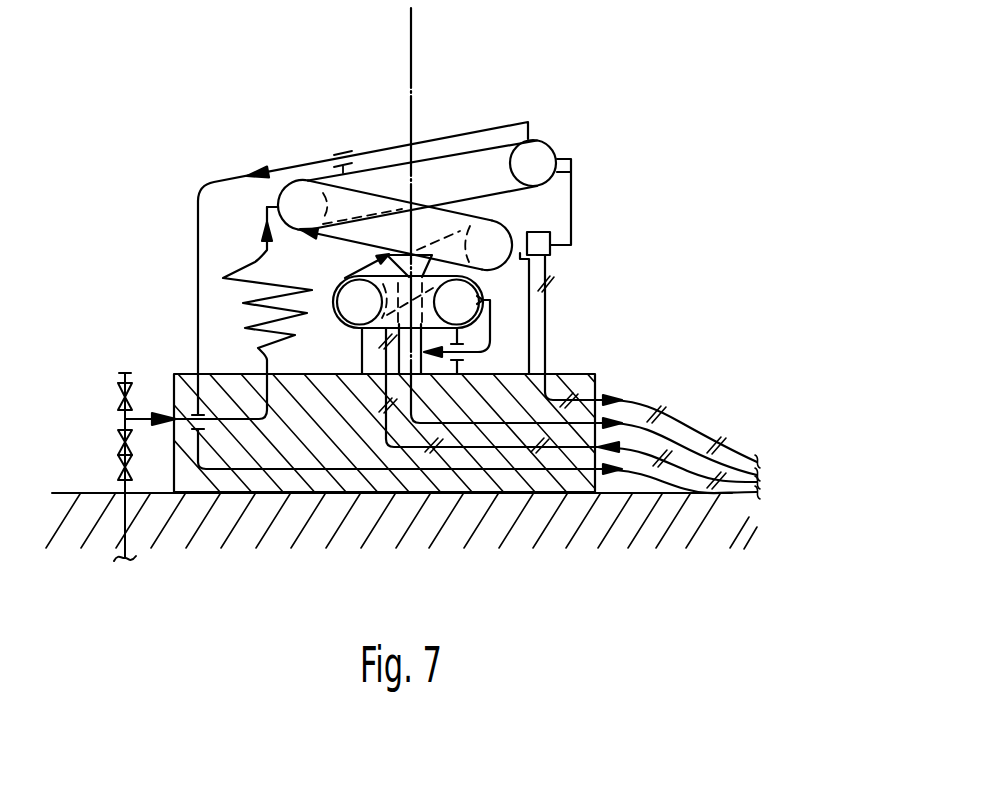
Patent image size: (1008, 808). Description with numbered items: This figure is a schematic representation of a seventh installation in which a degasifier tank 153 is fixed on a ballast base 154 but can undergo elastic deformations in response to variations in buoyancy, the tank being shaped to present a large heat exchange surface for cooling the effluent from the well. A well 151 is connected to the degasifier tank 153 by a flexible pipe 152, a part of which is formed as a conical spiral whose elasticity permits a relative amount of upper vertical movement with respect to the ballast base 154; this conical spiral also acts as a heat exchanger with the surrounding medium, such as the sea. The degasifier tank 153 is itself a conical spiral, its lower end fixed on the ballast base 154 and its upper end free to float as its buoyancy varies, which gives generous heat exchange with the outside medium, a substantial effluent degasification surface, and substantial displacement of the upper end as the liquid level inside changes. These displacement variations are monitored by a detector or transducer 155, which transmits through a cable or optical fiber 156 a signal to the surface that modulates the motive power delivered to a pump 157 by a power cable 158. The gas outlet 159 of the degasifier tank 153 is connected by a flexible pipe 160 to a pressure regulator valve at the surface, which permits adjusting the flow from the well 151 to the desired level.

The well 151 is at (123, 427).
The flexible pipe 152 is at (243, 303).
The degasifier tank 153 is at (550, 143).
The ballast base 154 is at (183, 377).
The detector or transducer 155 is at (573, 166).
The cable or optical fiber 156 is at (633, 402).
The pump 157 is at (412, 363).
The power cable 158 is at (648, 447).
The gas outlet 159 is at (528, 122).
The pipe 160 is at (674, 485).